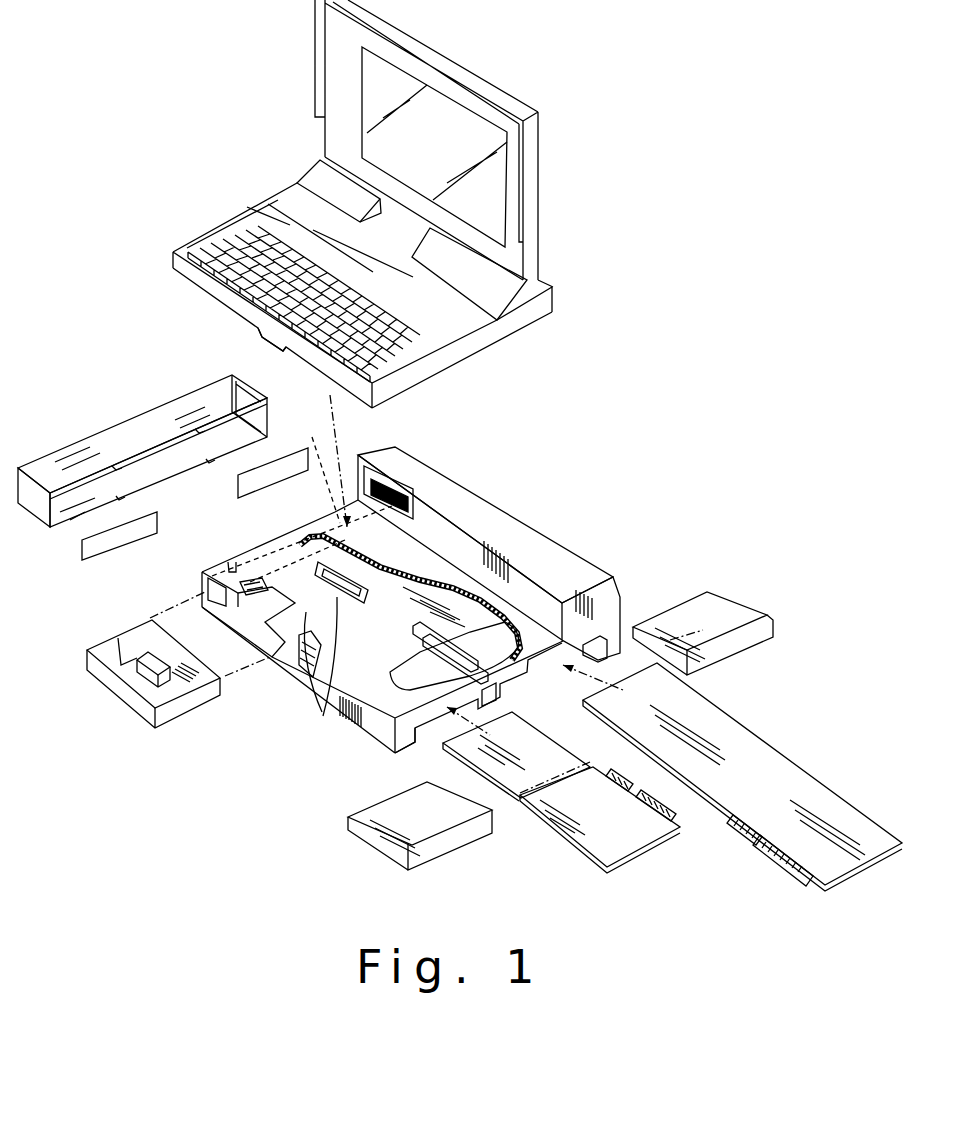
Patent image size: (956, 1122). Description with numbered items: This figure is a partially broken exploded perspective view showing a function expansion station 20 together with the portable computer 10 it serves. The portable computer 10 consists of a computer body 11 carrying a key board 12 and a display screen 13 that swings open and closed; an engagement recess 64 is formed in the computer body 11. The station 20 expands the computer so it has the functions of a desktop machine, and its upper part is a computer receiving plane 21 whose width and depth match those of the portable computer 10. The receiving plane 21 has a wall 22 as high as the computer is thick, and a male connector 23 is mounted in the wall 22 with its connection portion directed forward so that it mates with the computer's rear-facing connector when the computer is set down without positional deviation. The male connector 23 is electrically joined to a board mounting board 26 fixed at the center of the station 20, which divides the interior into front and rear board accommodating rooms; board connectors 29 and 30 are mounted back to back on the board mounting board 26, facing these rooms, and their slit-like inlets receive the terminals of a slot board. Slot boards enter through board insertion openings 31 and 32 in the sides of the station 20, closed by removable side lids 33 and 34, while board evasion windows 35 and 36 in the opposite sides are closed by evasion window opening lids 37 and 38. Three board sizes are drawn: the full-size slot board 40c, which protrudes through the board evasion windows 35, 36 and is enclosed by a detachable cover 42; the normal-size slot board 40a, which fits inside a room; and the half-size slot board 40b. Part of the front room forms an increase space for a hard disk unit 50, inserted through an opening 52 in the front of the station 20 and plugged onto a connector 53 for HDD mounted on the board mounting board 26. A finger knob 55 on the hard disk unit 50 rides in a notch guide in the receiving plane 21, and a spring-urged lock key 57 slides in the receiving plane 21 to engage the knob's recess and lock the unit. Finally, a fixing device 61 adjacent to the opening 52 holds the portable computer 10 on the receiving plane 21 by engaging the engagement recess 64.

The portable computer 10 is at (399, 204).
The computer body 11 is at (362, 279).
The key board 12 is at (252, 290).
The display screen 13 is at (465, 113).
The engagement recess 64 is at (271, 333).
The station 20 is at (399, 606).
The computer receiving plane 21 is at (427, 560).
The wall 22 is at (485, 529).
The male connector 23 is at (403, 490).
The board mounting board 26 is at (307, 543).
The board connector 29 is at (390, 672).
The board connector 30 is at (525, 698).
The board insertion opening 31 is at (393, 757).
The board insertion opening 32 is at (585, 647).
The side lid 33 is at (372, 829).
The side lid 34 is at (702, 592).
The board evasion window 35 is at (234, 567).
The board evasion window 36 is at (302, 488).
The evasion window opening lid 37 is at (137, 535).
The evasion window opening lid 38 is at (275, 481).
The normal-size slot board 40a is at (526, 810).
The half-size slot board 40b is at (575, 830).
The full-size slot board 40c is at (755, 745).
The cover 42 is at (123, 432).
The hard disk unit 50 is at (156, 673).
The opening 52 is at (228, 610).
The connector for HDD 53 is at (320, 672).
The finger knob 55 is at (124, 658).
The lock key 57 is at (240, 585).
The fixing device 61 is at (307, 671).